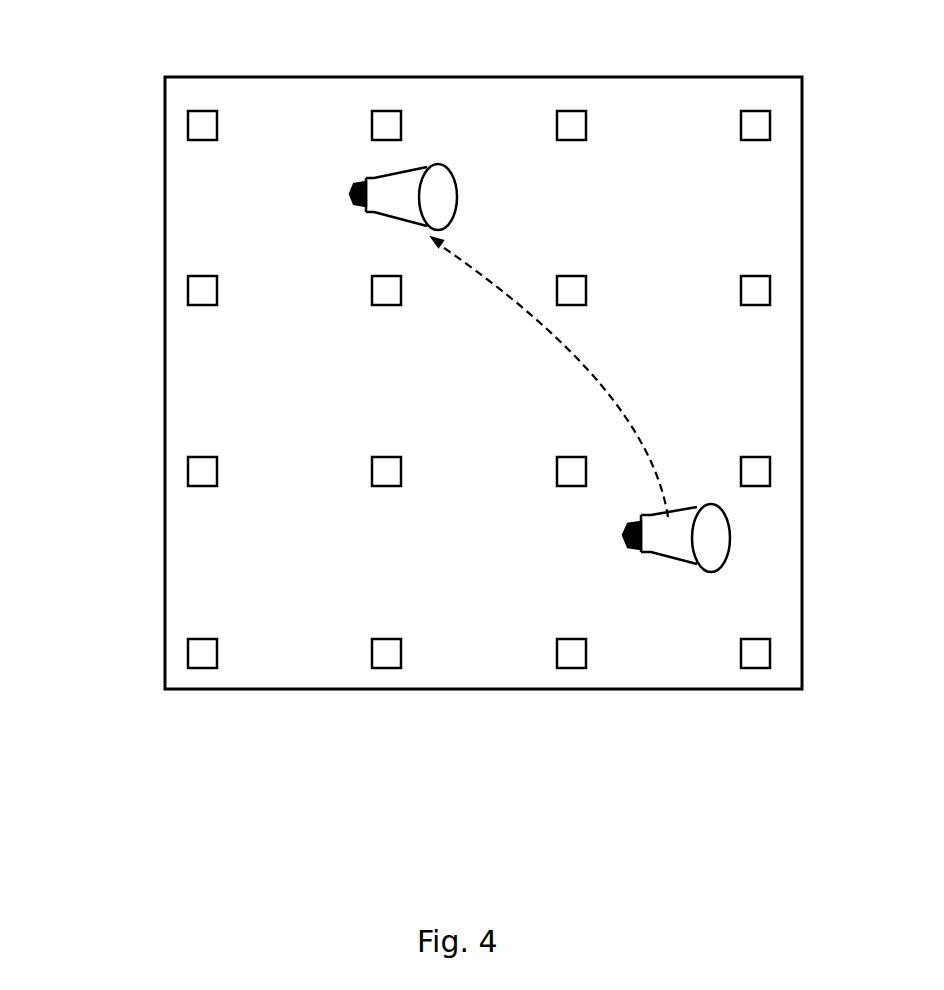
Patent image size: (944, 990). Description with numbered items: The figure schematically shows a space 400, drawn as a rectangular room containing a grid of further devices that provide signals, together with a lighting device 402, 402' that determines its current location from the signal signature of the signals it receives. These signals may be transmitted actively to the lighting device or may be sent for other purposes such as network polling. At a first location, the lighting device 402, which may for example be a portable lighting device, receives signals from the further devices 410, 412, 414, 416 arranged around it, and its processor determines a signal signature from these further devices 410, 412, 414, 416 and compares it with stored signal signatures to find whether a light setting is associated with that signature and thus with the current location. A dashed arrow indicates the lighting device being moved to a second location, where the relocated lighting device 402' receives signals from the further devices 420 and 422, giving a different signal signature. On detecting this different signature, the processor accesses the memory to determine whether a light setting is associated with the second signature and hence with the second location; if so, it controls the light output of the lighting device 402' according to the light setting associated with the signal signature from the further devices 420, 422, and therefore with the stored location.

The space 400 is at (165, 663).
The lighting device 402 is at (680, 485).
The lighting device 402' is at (340, 197).
The further device 410 is at (565, 472).
The further device 412 is at (758, 473).
The further device 414 is at (565, 655).
The further device 416 is at (758, 658).
The further device 420 is at (392, 289).
The further device 422 is at (390, 122).